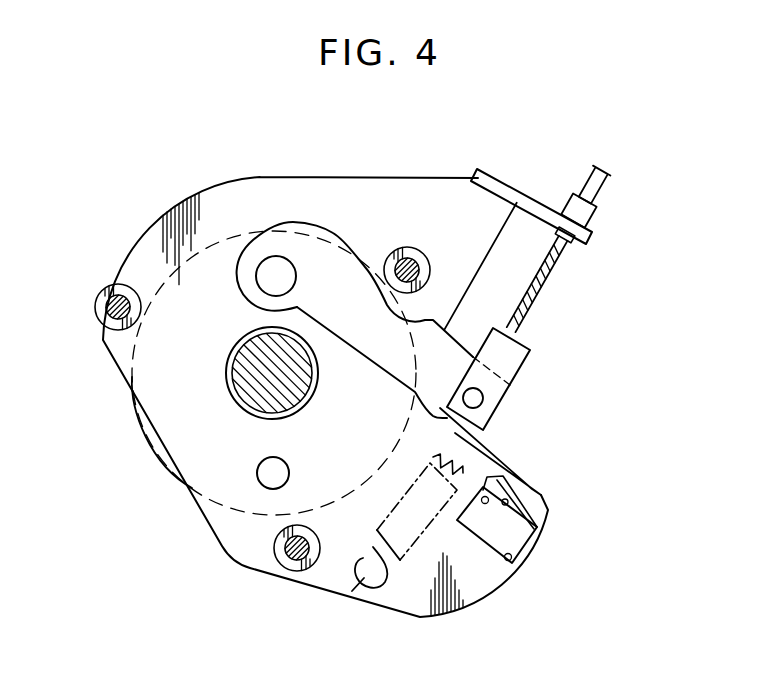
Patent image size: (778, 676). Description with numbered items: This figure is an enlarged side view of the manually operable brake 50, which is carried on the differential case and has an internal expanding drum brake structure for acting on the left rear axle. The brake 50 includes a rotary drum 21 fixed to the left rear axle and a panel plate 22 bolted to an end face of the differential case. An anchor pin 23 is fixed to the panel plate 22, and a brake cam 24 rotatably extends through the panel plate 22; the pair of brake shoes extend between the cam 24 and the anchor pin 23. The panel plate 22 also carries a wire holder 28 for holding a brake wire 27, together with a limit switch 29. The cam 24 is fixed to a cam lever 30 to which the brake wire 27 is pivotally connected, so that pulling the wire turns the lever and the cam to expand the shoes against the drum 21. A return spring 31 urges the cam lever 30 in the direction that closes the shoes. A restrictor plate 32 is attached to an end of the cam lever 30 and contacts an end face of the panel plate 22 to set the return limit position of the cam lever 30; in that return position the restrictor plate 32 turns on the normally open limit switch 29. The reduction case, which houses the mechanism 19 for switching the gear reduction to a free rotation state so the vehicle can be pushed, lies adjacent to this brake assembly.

The mechanism 19 is at (297, 392).
The rotary drum 21 is at (160, 460).
The panel plate 22 is at (157, 224).
The anchor pin 23 is at (263, 470).
The brake cam 24 is at (270, 267).
The brake wire 27 is at (530, 314).
The wire holder 28 is at (584, 244).
The limit switch 29 is at (513, 540).
The cam lever 30 is at (365, 262).
The return spring 31 is at (373, 547).
The restrictor plate 32 is at (522, 477).
The manually operable brake 50 is at (117, 424).